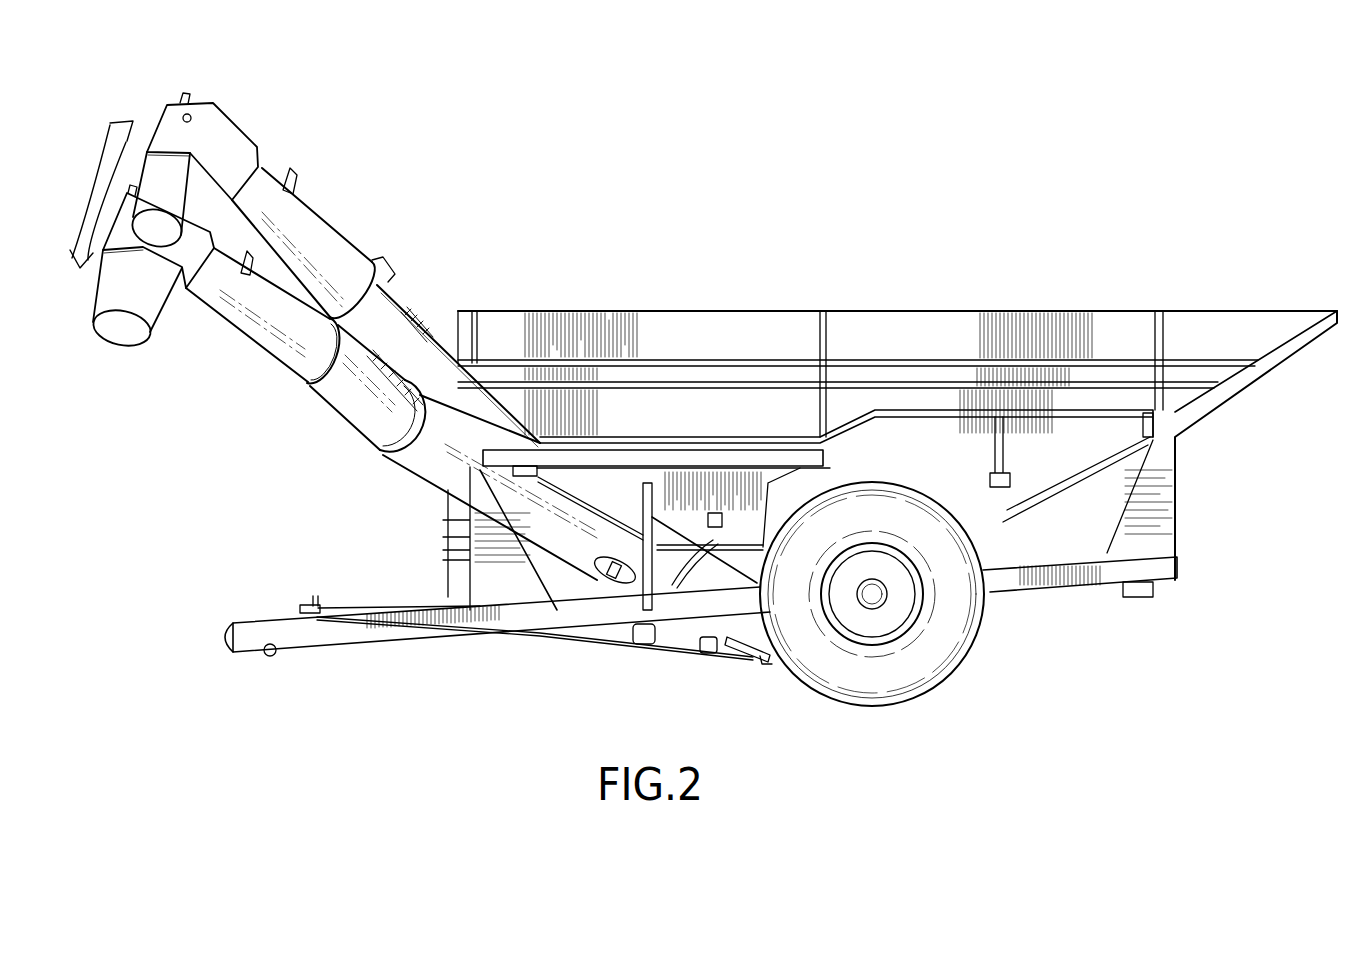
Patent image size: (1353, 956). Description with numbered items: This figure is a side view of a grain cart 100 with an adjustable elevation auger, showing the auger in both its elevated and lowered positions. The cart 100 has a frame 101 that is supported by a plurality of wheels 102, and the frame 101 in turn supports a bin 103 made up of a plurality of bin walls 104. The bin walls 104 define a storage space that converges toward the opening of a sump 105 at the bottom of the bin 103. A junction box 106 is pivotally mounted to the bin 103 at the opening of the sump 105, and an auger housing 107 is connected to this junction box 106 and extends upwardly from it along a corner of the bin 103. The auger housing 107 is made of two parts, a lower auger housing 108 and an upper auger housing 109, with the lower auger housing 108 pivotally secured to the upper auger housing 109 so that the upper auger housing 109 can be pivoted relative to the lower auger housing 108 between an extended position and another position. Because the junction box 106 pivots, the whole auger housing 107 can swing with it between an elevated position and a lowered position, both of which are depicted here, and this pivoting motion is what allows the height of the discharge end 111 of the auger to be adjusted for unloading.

The grain cart 100 is at (953, 177).
The frame 101 is at (592, 613).
The wheels 102 is at (952, 677).
The bin 103 is at (787, 327).
The bin walls 104 is at (1127, 323).
The sump 105 is at (768, 657).
The junction box 106 is at (707, 618).
The auger housing 107 is at (377, 452).
The lower auger housing 108 is at (433, 477).
The upper auger housing 109 is at (313, 387).
The discharge end 111 is at (247, 123).